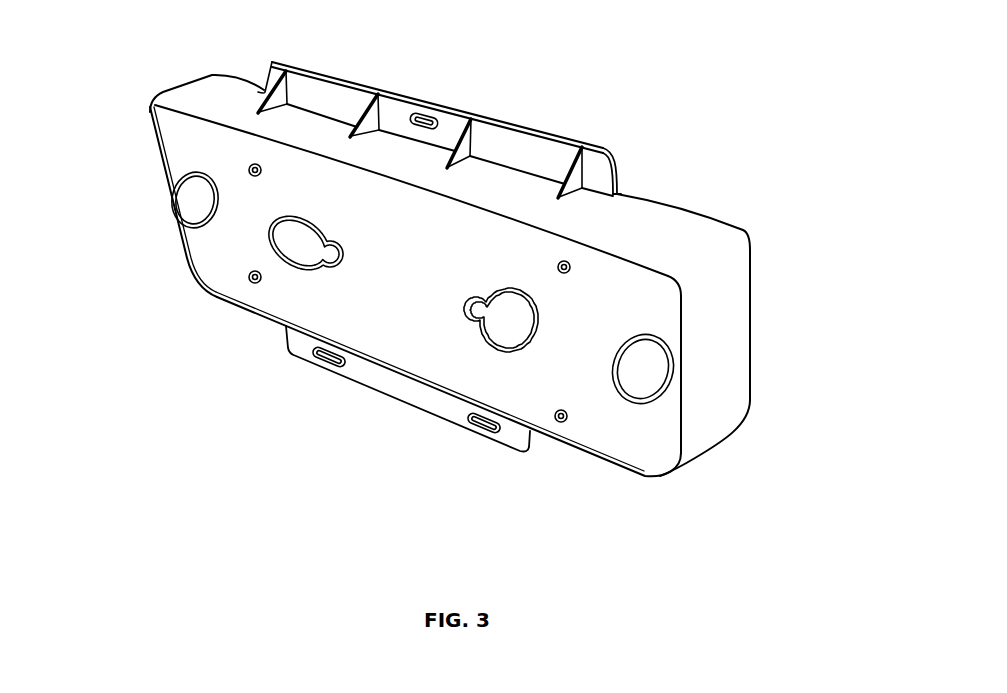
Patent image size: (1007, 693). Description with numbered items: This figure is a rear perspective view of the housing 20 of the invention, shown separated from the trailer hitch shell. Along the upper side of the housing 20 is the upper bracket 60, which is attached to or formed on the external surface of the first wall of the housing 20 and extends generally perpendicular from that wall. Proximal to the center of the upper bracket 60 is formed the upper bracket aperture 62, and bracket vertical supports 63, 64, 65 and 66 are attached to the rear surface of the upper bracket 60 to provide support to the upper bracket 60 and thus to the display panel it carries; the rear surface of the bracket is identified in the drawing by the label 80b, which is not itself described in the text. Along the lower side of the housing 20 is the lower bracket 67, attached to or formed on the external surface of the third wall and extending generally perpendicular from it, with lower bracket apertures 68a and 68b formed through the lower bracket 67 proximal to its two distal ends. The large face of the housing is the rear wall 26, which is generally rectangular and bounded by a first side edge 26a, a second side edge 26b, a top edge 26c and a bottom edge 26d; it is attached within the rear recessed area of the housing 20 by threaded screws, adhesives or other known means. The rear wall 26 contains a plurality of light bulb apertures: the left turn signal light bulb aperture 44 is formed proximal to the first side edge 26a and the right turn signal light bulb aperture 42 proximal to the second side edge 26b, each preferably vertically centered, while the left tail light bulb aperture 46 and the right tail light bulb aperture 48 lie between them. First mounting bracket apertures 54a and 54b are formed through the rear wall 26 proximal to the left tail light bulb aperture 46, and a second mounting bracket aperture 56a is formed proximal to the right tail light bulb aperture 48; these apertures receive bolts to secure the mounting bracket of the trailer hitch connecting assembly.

The housing 20 is at (720, 439).
The rear wall 26 is at (685, 467).
The first side edge 26a is at (690, 396).
The second side edge 26b is at (177, 245).
The top edge 26c is at (653, 258).
The bottom edge 26d is at (619, 474).
The right turn signal light bulb aperture 42 is at (653, 372).
The left turn signal light bulb aperture 44 is at (180, 202).
The left tail light bulb aperture 46 is at (520, 330).
The right tail light bulb aperture 48 is at (253, 282).
The first mounting bracket aperture 54a is at (566, 261).
The first mounting bracket aperture 54b is at (568, 428).
The second mounting bracket aperture 56a is at (252, 168).
The upper bracket 60 is at (430, 113).
The upper bracket aperture 62 is at (458, 103).
The bracket vertical support 63 is at (590, 177).
The bracket vertical support 64 is at (533, 157).
The bracket vertical support 65 is at (400, 110).
The bracket vertical support 66 is at (297, 98).
The gusset rib 80b is at (565, 152).
The lower bracket 67 is at (397, 401).
The lower bracket aperture 68a is at (480, 425).
The lower bracket aperture 68b is at (308, 355).